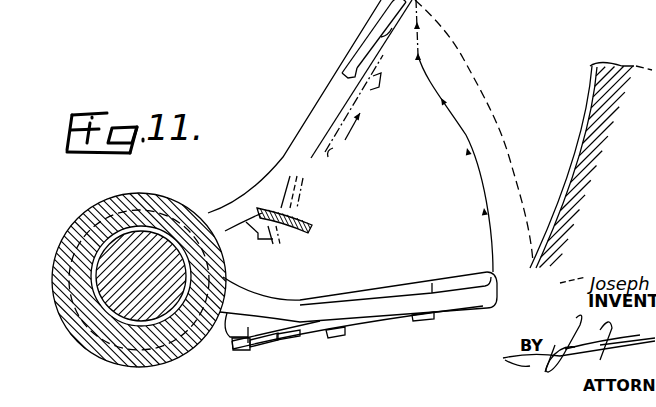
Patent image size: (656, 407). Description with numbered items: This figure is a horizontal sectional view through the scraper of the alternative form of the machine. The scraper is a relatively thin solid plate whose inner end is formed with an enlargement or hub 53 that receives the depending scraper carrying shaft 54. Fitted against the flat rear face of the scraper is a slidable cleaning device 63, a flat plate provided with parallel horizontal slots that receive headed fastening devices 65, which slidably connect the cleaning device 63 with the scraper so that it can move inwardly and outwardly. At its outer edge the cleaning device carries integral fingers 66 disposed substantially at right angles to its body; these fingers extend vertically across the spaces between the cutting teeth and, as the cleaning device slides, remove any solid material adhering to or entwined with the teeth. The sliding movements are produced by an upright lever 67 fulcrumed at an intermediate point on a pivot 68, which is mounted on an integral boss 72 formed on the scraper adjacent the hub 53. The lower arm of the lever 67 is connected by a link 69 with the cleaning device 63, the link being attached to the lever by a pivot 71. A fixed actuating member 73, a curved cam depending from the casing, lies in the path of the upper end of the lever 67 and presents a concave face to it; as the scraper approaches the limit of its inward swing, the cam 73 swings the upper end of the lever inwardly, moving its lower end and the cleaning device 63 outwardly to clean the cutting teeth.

The hub 53 is at (80, 228).
The scraper carrying shaft 54 is at (98, 265).
The cleaning device 63 is at (373, 320).
The headed fastening devices 65 is at (427, 318).
The fingers 66 is at (483, 263).
The lever 67 is at (282, 335).
The pivot 68 is at (329, 336).
The link 69 is at (310, 344).
The pivot 71 is at (243, 353).
The boss 72 is at (228, 334).
The fixed actuating member 73 is at (302, 227).